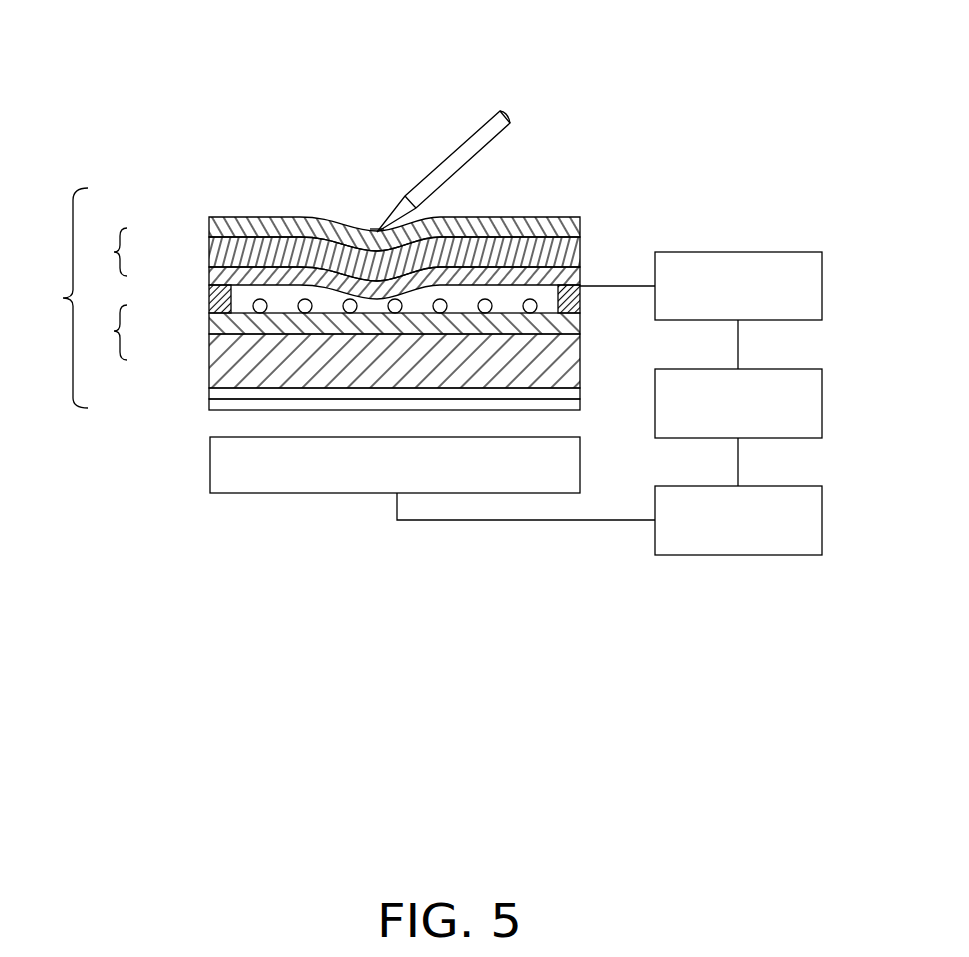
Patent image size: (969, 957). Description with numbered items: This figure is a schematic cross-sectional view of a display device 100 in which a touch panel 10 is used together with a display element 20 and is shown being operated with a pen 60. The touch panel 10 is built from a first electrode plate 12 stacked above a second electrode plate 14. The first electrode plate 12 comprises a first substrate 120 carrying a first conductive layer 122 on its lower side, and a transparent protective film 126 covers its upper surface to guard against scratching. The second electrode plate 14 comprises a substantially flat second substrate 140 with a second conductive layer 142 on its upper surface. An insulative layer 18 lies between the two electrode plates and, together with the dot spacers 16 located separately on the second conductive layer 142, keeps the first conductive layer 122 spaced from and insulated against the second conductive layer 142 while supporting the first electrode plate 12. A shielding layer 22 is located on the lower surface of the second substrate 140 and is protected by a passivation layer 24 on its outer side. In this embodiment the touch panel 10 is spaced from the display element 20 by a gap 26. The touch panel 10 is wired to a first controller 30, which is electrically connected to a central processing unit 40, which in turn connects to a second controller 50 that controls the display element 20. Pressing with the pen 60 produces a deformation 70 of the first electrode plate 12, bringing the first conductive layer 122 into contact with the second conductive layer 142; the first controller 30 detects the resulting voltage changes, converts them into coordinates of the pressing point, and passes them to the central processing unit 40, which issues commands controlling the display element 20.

The display device 100 is at (497, 34).
The touch panel 10 is at (60, 298).
The first electrode plate 12 is at (107, 252).
The second electrode plate 14 is at (107, 332).
The transparent protective film 126 is at (209, 222).
The first substrate 120 is at (209, 244).
The first conductive layer 122 is at (209, 277).
The second conductive layer 142 is at (209, 319).
The second substrate 140 is at (209, 352).
The dot spacers 16 is at (530, 299).
The insulative layer 18 is at (582, 300).
The shielding layer 22 is at (209, 392).
The passivation layer 24 is at (209, 405).
The gap 26 is at (215, 425).
The display element 20 is at (216, 470).
The first controller 30 is at (815, 295).
The central processing unit 40 is at (815, 399).
The second controller 50 is at (815, 500).
The pen 60 is at (471, 140).
The deformation 70 is at (377, 232).